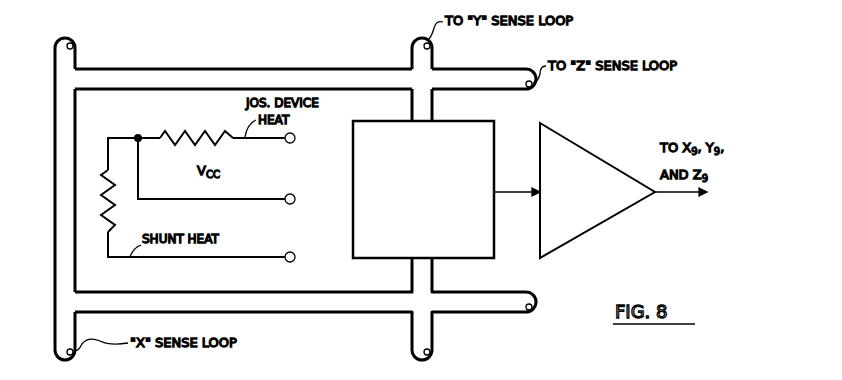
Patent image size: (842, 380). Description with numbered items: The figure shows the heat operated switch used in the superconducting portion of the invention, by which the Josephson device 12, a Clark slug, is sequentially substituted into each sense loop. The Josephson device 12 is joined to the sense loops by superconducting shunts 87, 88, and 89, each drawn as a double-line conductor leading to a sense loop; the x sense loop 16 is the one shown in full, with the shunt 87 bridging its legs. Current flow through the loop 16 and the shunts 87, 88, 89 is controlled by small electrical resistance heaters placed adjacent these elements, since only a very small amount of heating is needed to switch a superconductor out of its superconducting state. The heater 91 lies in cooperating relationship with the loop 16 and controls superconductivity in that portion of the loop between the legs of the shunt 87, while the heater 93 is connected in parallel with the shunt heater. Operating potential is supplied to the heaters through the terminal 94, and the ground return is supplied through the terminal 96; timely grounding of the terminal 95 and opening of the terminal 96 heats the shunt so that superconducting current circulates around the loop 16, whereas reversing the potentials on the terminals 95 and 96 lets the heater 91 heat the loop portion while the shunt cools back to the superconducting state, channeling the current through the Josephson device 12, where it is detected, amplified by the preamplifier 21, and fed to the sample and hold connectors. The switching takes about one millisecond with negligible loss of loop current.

The x sense loop 16 is at (55, 205).
The superconducting shunt 87 is at (222, 69).
The superconducting shunt 88 is at (411, 52).
The superconducting shunt 89 is at (461, 68).
The heater 93 is at (185, 134).
The heater 91 is at (114, 207).
The terminal 95 is at (293, 142).
The terminal 94 is at (293, 203).
The terminal 96 is at (293, 261).
The Josephson device 12 is at (414, 233).
The preamplifier 21 is at (580, 150).